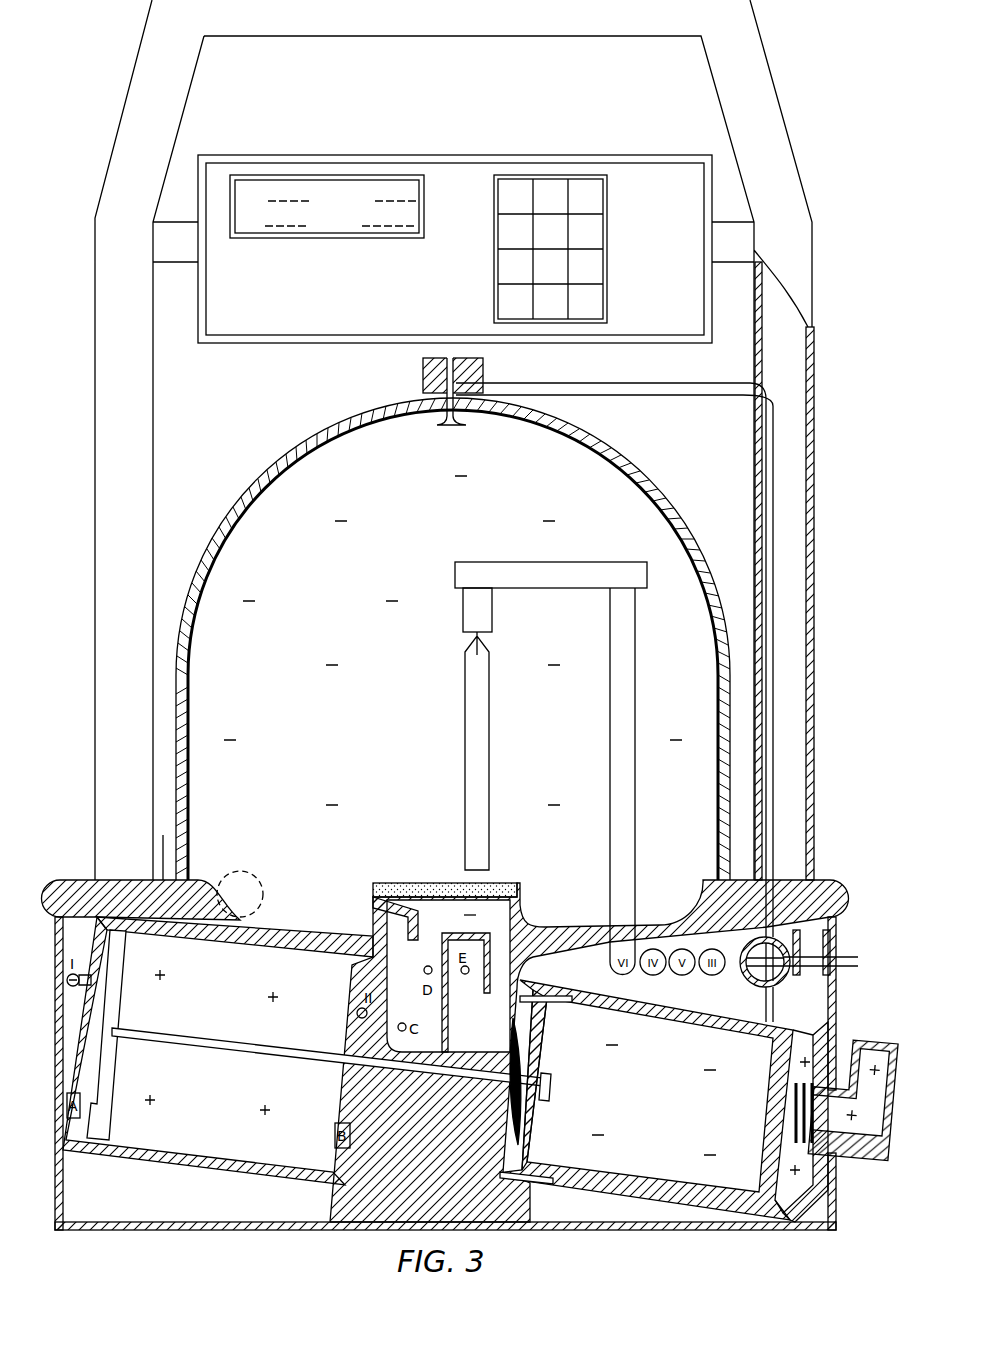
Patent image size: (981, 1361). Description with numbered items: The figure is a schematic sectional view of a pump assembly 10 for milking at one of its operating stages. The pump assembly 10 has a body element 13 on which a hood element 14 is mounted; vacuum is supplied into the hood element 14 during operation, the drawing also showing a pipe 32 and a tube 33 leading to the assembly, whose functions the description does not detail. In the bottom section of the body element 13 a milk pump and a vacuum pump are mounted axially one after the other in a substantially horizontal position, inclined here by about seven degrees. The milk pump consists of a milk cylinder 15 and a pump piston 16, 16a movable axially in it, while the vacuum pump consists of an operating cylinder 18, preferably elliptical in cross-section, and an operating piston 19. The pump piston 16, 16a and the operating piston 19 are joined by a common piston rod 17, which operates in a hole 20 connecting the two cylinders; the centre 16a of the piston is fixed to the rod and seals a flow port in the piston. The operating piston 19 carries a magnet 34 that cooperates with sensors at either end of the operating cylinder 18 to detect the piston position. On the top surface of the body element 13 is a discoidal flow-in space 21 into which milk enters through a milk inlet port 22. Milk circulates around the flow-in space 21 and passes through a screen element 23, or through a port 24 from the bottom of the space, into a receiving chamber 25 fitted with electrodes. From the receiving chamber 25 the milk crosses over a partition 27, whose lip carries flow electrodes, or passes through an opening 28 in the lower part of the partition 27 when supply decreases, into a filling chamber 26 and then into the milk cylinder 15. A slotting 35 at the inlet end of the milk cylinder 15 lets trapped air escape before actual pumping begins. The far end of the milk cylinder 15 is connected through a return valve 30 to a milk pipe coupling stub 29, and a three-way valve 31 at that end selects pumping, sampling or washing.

The pump assembly 10 is at (104, 126).
The body element 13 is at (88, 892).
The hood element 14 is at (234, 508).
The milk cylinder 15 is at (683, 1012).
The pump piston 16 is at (548, 1030).
The pump piston centre 16a is at (538, 1112).
The piston rod 17 is at (290, 1055).
The operating cylinder 18 is at (234, 940).
The operating piston 19 is at (107, 1006).
The hole 20 is at (365, 1098).
The flow-in space 21 is at (285, 932).
The milk inlet port 22 is at (242, 880).
The screen element 23 is at (423, 883).
The port 24 is at (368, 930).
The receiving chamber 25 is at (418, 977).
The filling chamber 26 is at (482, 1027).
The partition 27 is at (418, 943).
The opening 28 is at (455, 1040).
The milk pipe coupling stub 29 is at (896, 1116).
The return valve 30 is at (792, 1030).
The three-way valve 31 is at (789, 944).
The pipe 32 is at (843, 957).
The tube 33 is at (769, 766).
The magnet 34 is at (100, 1112).
The slotting 35 is at (567, 1004).